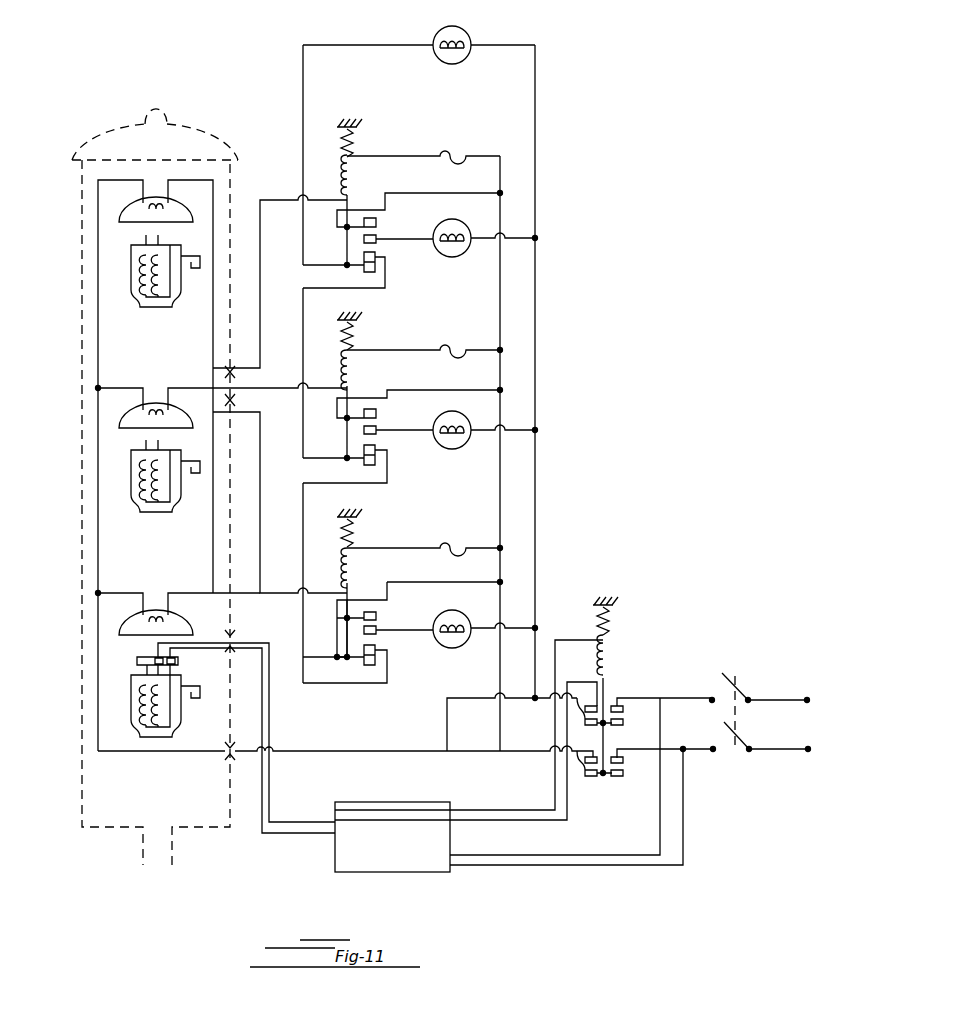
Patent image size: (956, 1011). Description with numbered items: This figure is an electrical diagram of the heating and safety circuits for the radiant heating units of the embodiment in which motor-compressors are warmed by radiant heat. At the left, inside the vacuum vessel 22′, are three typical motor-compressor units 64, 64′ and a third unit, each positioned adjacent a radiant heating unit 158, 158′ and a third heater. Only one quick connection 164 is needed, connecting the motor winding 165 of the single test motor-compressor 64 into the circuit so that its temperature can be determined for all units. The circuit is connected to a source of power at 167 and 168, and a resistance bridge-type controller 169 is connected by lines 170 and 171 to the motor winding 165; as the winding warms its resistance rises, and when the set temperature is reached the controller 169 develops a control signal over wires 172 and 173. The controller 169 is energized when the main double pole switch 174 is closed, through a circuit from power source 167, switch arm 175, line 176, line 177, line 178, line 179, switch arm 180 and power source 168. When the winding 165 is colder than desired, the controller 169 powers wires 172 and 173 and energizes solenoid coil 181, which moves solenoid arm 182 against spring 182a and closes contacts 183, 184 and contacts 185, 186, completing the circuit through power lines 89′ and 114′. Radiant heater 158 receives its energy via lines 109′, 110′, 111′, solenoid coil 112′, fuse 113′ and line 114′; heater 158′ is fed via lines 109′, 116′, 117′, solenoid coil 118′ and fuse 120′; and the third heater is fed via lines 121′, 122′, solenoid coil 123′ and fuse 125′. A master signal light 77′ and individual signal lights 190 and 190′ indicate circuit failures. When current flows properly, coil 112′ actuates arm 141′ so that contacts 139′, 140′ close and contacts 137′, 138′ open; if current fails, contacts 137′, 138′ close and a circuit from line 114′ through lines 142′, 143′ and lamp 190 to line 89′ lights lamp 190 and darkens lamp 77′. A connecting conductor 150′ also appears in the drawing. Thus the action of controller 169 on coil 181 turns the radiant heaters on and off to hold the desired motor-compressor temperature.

The vacuum vessel 22′ is at (233, 598).
The line 121′ is at (110, 182).
The line 122′ is at (171, 182).
The line 116′ is at (104, 388).
The line 117′ is at (170, 388).
The radiant heating unit 158′ is at (172, 411).
The motor-compressor unit 64′ is at (176, 507).
The line 111′ is at (213, 562).
The line 110′ is at (104, 594).
The radiant heating unit 158 is at (176, 617).
The quick connection 164 is at (178, 661).
The motor winding 165 is at (164, 695).
The motor-compressor 64 is at (179, 720).
The line 170 is at (270, 803).
The line 171 is at (262, 829).
The line 109′ is at (386, 752).
The controller 169 is at (415, 873).
The wire 172 is at (490, 810).
The wire 173 is at (507, 820).
The line 177 is at (660, 797).
The line 178 is at (612, 866).
The spring 182a is at (610, 632).
The solenoid coil 181 is at (613, 656).
The solenoid arm 182 is at (608, 684).
The contact 183 is at (588, 722).
The contact 184 is at (623, 711).
The contact 185 is at (587, 779).
The contact 186 is at (624, 760).
The line 176 is at (672, 698).
The line 179 is at (700, 749).
The switch arm 175 is at (725, 679).
The power source 167 is at (807, 700).
The main double pole switch 174 is at (738, 708).
The switch arm 180 is at (747, 752).
The power source 168 is at (808, 749).
The line 114′ is at (500, 525).
The line 89′ is at (535, 525).
The master signal light 77′ is at (462, 62).
The conductor 150′ is at (303, 515).
The solenoid coil 123′ is at (351, 187).
The fuse 125′ is at (451, 155).
The solenoid coil 118′ is at (346, 380).
The fuse 120′ is at (452, 346).
The signal light 190′ is at (456, 450).
The solenoid coil 112′ is at (346, 577).
The fuse 113′ is at (451, 547).
The line 142′ is at (441, 586).
The arm 141′ is at (367, 592).
The line 143′ is at (337, 620).
The contact 137′ is at (376, 616).
The contact 138′ is at (378, 632).
The contact 140′ is at (370, 665).
The contact 139′ is at (384, 650).
The signal lamp 190 is at (459, 648).